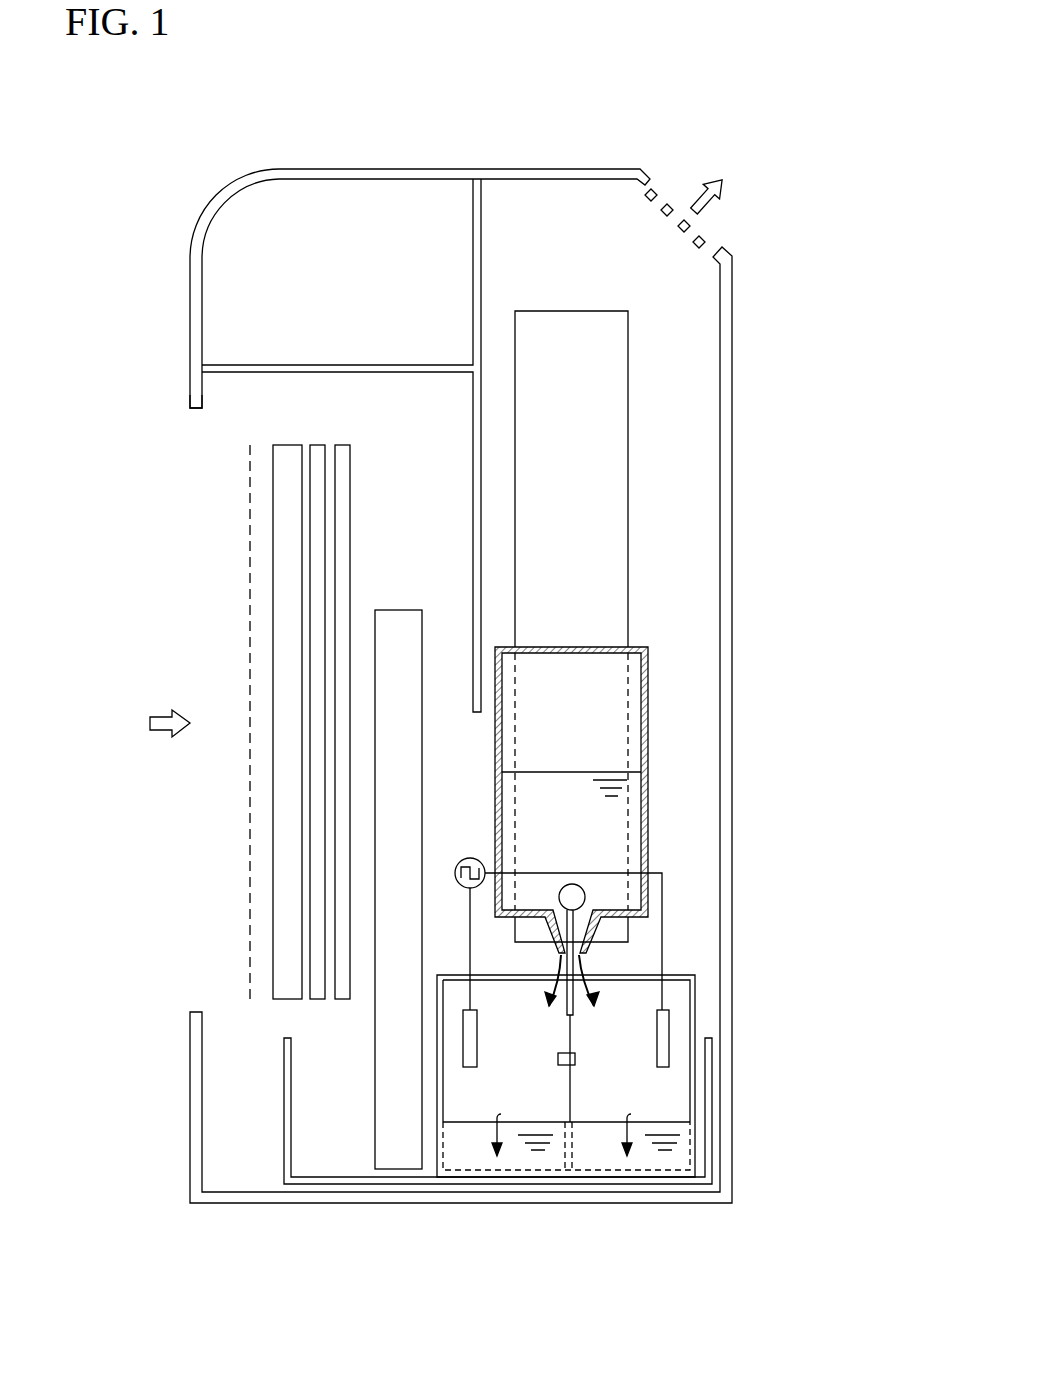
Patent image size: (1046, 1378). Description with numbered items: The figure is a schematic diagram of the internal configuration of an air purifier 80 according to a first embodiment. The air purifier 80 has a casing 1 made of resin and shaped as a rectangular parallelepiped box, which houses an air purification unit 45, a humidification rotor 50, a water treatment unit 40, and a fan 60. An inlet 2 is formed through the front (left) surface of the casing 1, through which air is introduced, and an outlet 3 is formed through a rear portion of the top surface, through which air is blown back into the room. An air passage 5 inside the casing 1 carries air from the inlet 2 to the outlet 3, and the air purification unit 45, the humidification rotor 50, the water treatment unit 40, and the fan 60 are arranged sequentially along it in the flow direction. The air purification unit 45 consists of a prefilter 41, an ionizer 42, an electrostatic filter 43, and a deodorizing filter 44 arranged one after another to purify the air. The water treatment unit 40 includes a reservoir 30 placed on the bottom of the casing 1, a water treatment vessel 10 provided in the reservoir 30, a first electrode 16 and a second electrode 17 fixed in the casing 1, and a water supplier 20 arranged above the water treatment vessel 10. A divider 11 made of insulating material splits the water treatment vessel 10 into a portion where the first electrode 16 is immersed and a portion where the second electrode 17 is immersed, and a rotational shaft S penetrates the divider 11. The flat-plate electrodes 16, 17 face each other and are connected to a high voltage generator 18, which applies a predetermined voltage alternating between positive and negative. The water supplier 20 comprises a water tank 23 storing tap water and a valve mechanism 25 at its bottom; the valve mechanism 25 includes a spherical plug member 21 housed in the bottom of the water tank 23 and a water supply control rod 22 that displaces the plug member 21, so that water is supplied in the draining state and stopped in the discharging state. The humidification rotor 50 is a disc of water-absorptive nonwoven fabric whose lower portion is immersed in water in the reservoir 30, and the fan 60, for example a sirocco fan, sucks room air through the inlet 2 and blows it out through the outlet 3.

The casing 1 is at (727, 490).
The inlet 2 is at (196, 410).
The outlet 3 is at (652, 182).
The air passage 5 is at (426, 438).
The water treatment vessel 10 is at (697, 998).
The divider 11 is at (565, 1108).
The first electrode 16 is at (477, 1035).
The second electrode 17 is at (657, 1035).
The high voltage generator 18 is at (470, 858).
The water supplier 20 is at (654, 788).
The plug member 21 is at (585, 897).
The water supply control rod 22 is at (572, 935).
The water tank 23 is at (650, 688).
The valve mechanism 25 is at (596, 878).
The reservoir 30 is at (710, 1068).
The water treatment unit 40 is at (700, 962).
The prefilter 41 is at (250, 447).
The ionizer 42 is at (285, 452).
The electrostatic filter 43 is at (318, 452).
The deodorizing filter 44 is at (343, 452).
The air purification unit 45 is at (262, 1020).
The humidification rotor 50 is at (398, 618).
The fan 60 is at (612, 363).
The air purifier 80 is at (204, 143).
The rotational shaft S is at (577, 1058).